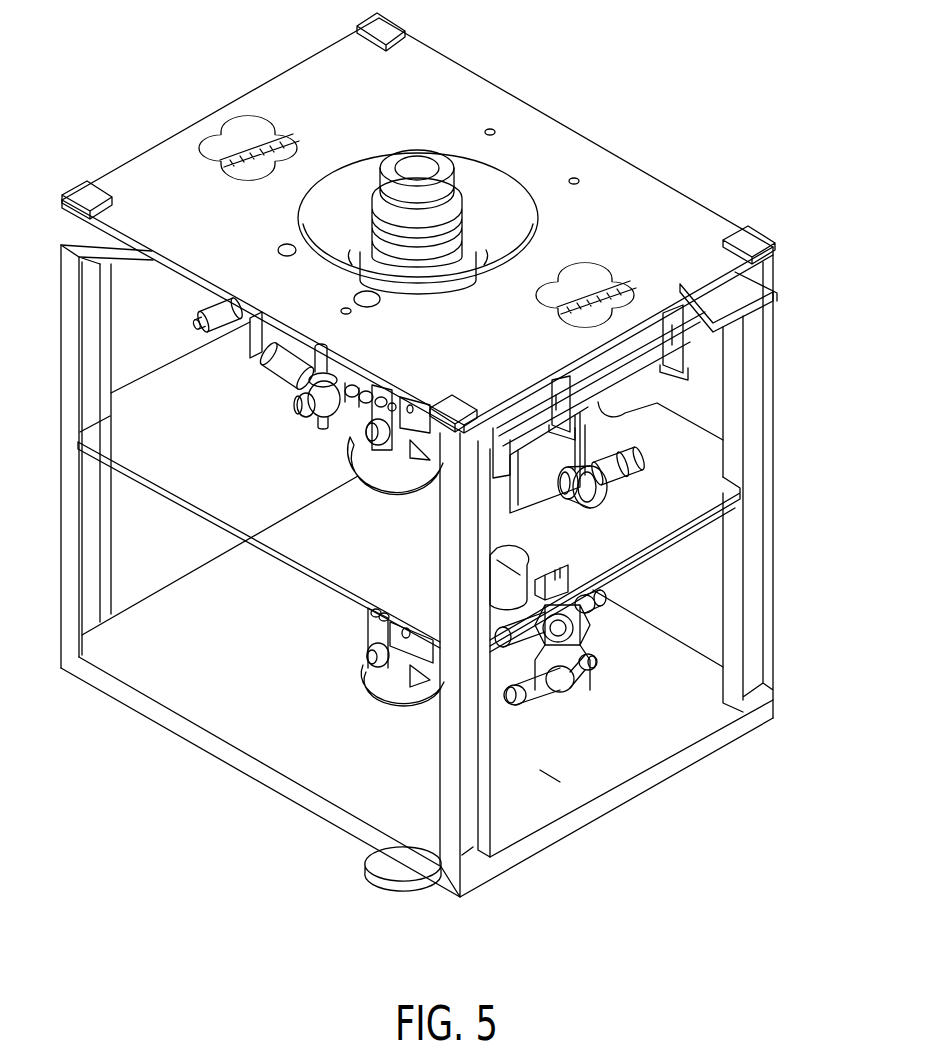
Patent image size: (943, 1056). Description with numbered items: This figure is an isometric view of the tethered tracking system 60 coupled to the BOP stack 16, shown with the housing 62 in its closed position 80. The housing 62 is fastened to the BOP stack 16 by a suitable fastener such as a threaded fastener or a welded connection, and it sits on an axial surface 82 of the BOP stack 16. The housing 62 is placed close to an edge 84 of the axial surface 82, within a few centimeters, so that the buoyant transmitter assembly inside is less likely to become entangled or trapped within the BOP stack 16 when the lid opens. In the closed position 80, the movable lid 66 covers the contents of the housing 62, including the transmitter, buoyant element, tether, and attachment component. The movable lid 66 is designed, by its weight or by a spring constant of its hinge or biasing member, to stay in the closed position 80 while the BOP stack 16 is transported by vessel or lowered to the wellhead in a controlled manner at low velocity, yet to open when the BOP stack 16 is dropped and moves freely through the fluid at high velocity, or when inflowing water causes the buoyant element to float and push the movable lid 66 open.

The BOP stack 16 is at (775, 387).
The axial surface 82 is at (433, 78).
The edge 84 is at (697, 517).
The housing 62 is at (503, 538).
The closed position 80 is at (534, 561).
The movable lid 66 is at (503, 570).
The tethered tracking system 60 is at (548, 770).